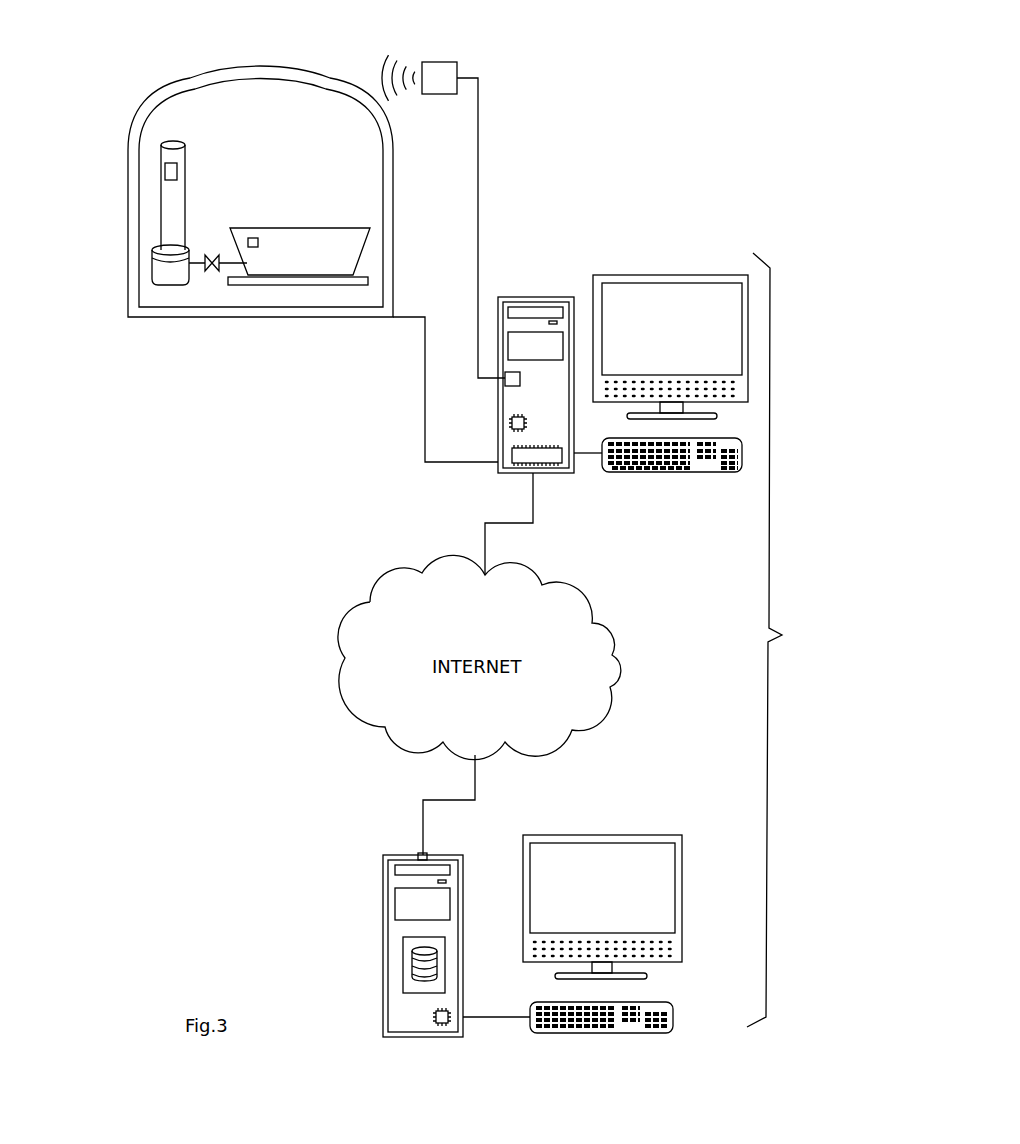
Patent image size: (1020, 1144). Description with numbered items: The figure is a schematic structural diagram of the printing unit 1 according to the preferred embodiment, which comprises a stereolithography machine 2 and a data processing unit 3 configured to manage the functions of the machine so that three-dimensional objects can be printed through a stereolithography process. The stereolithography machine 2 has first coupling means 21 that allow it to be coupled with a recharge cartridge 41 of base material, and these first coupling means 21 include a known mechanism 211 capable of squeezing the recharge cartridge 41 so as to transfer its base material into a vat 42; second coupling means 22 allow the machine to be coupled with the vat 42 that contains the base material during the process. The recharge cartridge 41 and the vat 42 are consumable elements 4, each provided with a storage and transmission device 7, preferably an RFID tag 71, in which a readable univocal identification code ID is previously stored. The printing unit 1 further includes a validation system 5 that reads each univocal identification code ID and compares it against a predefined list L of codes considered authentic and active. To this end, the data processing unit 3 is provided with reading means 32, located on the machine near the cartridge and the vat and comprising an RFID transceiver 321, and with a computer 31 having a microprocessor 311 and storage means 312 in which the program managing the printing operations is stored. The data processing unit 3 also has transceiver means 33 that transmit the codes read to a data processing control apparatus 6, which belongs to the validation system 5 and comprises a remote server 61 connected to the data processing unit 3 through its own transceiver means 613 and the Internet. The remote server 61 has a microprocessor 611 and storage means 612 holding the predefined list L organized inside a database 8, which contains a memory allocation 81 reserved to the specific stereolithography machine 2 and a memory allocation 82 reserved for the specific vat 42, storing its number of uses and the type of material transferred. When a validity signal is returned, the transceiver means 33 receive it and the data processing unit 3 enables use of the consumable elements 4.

The printing unit 1 is at (640, 127).
The stereolithography machine 2 is at (138, 72).
The data processing unit 3 is at (688, 235).
The consumable elements 4 is at (239, 163).
The validation system 5 is at (773, 640).
The data processing control apparatus 6 is at (506, 925).
The storage and transmission device 7 is at (152, 170).
The RFID tag 71 is at (177, 153).
The univocal identification code ID is at (250, 180).
The first coupling means 21 is at (148, 267).
The mechanism 211 is at (168, 275).
The second coupling means 22 is at (267, 280).
The recharge cartridge 41 is at (172, 208).
The vat 42 is at (307, 252).
The computer 31 is at (612, 277).
The microprocessor 311 is at (510, 423).
The storage means 312 is at (542, 457).
The reading means 32 is at (465, 67).
The RFID transceiver 321 is at (443, 73).
The transceiver means 33 is at (516, 380).
The remote server 61 is at (667, 837).
The microprocessor 611 is at (446, 1018).
The storage means 612 is at (407, 935).
The transceiver means 613 is at (424, 855).
The database 8 is at (371, 953).
The predefined list L is at (412, 955).
The memory allocation 81 is at (412, 965).
The memory allocation 82 is at (412, 978).